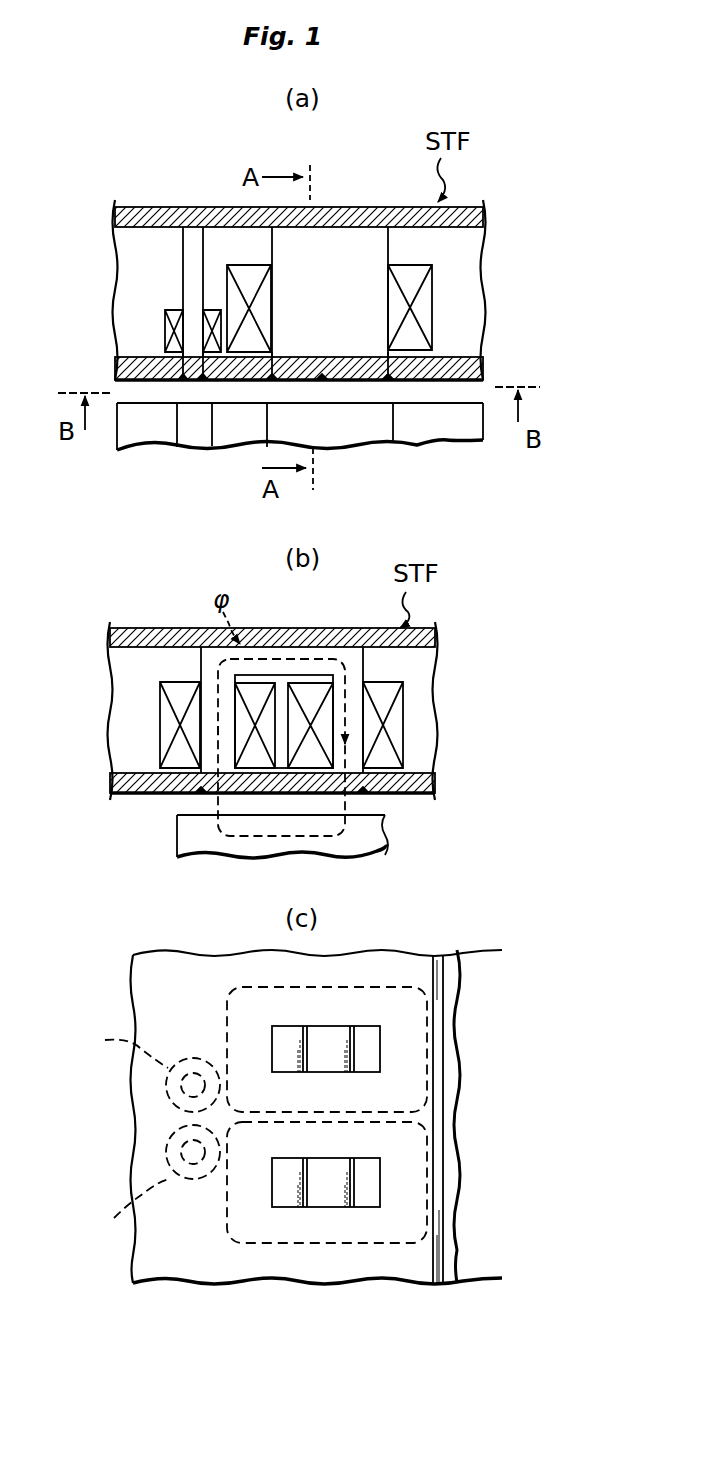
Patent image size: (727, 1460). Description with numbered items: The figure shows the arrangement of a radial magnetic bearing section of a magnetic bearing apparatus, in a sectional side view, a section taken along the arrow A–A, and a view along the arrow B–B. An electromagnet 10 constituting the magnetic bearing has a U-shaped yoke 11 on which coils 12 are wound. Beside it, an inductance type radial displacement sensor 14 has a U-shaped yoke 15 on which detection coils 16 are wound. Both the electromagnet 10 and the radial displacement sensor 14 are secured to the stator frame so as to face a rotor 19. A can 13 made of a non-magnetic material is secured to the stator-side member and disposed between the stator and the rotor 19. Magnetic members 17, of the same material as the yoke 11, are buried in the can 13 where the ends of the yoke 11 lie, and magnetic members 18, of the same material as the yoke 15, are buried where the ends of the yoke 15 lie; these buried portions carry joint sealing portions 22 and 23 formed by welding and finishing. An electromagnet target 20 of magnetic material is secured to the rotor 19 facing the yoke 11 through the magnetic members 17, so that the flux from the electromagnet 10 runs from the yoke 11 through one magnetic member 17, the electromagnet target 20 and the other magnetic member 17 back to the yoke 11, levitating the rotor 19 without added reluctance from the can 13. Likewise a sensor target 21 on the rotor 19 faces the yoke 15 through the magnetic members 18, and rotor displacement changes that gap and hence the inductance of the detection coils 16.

The electromagnet 10 is at (338, 222).
The U-shaped yoke 11 is at (360, 237).
The coils 12 is at (420, 299).
The can 13 is at (490, 364).
The inductance type radial displacement sensor 14 is at (191, 220).
The U-shaped yoke 15 is at (192, 253).
The detection coils 16 is at (170, 327).
The magnetic members 17 is at (322, 380).
The magnetic members 18 is at (190, 380).
The rotor 19 is at (483, 420).
The electromagnet target 20 is at (368, 422).
The sensor target 21 is at (205, 380).
The joint sealing portions 22 is at (272, 380).
The joint sealing portions 23 is at (180, 380).